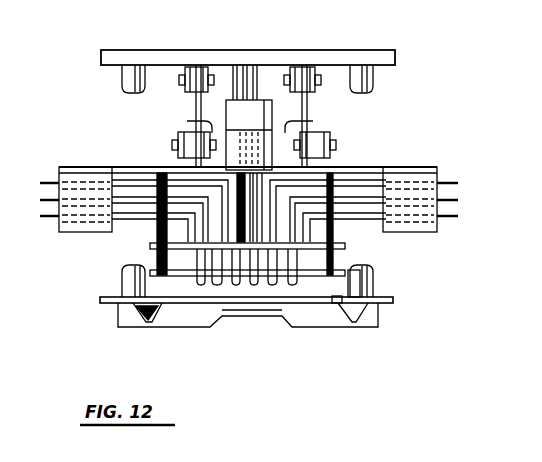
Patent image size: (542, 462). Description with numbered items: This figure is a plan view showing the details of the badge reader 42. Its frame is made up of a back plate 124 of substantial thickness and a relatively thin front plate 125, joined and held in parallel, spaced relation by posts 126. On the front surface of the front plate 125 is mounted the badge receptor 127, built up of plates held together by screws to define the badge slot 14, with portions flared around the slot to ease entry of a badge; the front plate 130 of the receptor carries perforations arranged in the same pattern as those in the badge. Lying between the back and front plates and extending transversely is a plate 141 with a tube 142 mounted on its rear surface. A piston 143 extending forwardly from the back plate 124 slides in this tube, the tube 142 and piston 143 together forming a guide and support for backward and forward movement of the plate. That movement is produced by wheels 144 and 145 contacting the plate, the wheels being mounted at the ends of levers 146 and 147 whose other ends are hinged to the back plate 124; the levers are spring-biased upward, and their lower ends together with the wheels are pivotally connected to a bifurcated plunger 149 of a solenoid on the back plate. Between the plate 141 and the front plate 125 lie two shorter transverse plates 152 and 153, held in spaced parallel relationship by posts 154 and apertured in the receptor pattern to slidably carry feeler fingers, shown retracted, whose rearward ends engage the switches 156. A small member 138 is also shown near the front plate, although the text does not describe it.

The back plate 124 is at (241, 40).
The badge reader 42 is at (348, 60).
The posts 126 is at (125, 81).
The lever 146 is at (198, 108).
The lever 147 is at (306, 102).
The piston 143 is at (245, 65).
The tube 142 is at (268, 105).
The wheel 144 is at (178, 148).
The wheel 145 is at (330, 147).
The bifurcated plunger 149 is at (248, 124).
The plate 141 is at (375, 167).
The posts 154 is at (160, 230).
The switches 156 is at (87, 218).
The transverse plate 152 is at (345, 245).
The transverse plate 153 is at (362, 290).
The stop member 138 is at (340, 297).
The front plate 125 is at (393, 300).
The badge receptor 127 is at (375, 315).
The front plate of the receptor 130 is at (178, 322).
The badge slot 14 is at (310, 310).